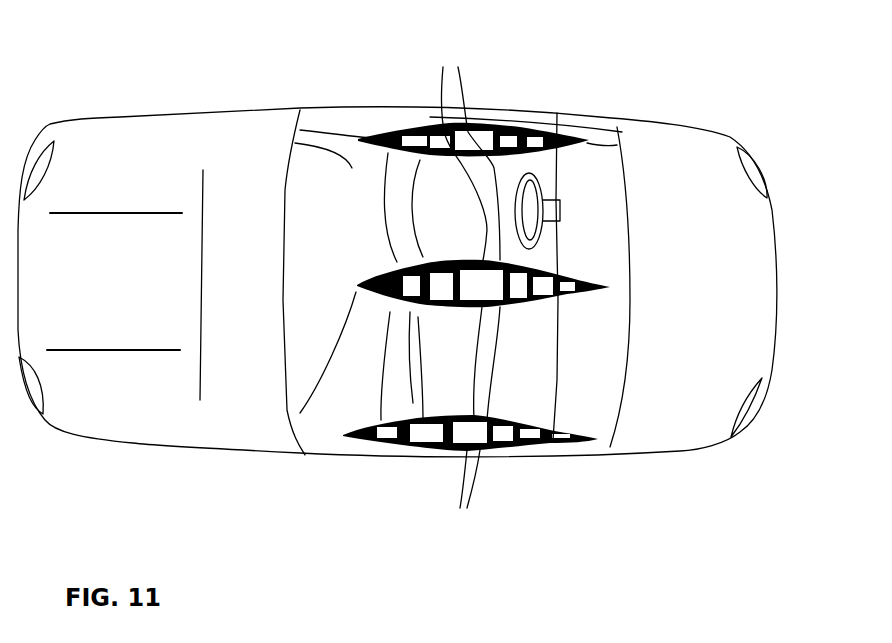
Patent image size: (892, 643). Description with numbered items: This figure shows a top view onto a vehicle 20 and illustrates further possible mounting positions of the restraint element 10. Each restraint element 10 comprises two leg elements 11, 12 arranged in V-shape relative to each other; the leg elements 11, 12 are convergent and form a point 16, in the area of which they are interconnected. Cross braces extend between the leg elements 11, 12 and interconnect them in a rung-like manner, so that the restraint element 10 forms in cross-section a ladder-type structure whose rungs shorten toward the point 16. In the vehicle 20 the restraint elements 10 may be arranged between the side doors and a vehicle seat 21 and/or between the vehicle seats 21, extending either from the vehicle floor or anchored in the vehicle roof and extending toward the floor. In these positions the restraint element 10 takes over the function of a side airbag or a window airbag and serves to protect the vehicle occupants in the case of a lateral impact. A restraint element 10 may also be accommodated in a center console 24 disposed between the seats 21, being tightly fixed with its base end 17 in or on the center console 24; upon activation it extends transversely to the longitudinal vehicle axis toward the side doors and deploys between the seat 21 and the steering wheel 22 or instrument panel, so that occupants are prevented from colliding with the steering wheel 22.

The restraint element 10 is at (578, 128).
The leg element 11 is at (532, 128).
The leg element 12 is at (390, 145).
The point 16 is at (353, 322).
The base end 17 is at (468, 287).
The vehicle 20 is at (712, 80).
The vehicle seat 21 is at (430, 183).
The steering wheel 22 is at (557, 113).
The center console 24 is at (305, 455).